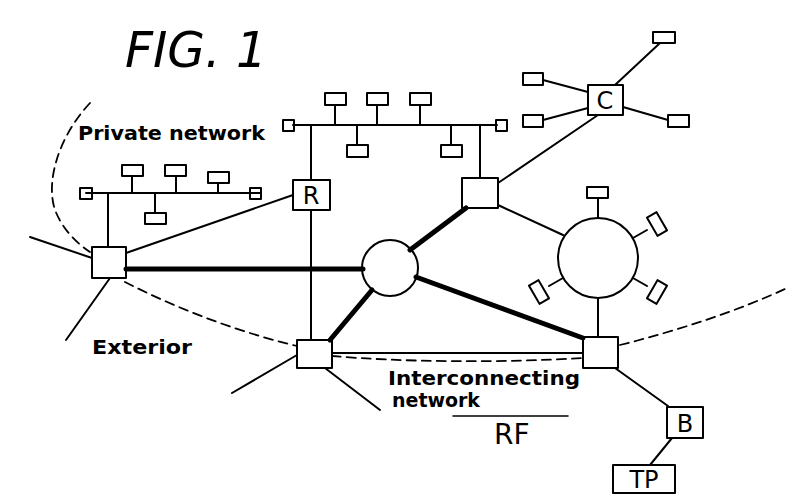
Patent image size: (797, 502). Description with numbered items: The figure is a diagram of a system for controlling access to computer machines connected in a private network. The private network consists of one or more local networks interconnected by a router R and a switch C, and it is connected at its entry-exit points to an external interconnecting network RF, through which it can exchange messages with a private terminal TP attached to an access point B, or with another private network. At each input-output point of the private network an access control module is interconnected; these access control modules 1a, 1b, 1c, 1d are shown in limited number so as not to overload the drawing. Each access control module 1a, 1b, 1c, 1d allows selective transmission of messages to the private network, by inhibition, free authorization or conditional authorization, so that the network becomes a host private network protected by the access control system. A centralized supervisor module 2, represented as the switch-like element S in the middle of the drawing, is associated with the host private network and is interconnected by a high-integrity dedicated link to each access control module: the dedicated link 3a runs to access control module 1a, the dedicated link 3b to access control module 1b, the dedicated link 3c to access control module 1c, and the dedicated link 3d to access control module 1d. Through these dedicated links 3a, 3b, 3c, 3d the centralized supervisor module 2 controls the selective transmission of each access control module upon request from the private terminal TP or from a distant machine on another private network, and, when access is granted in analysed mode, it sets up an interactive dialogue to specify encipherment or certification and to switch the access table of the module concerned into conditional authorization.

The access control module 1a is at (96, 267).
The access control module 1b is at (310, 364).
The access control module 1c is at (620, 360).
The access control module 1d is at (462, 190).
The centralized supervisor module 2 is at (375, 253).
The dedicated link 3a is at (207, 267).
The dedicated link 3b is at (353, 318).
The dedicated link 3c is at (498, 298).
The dedicated link 3d is at (440, 226).